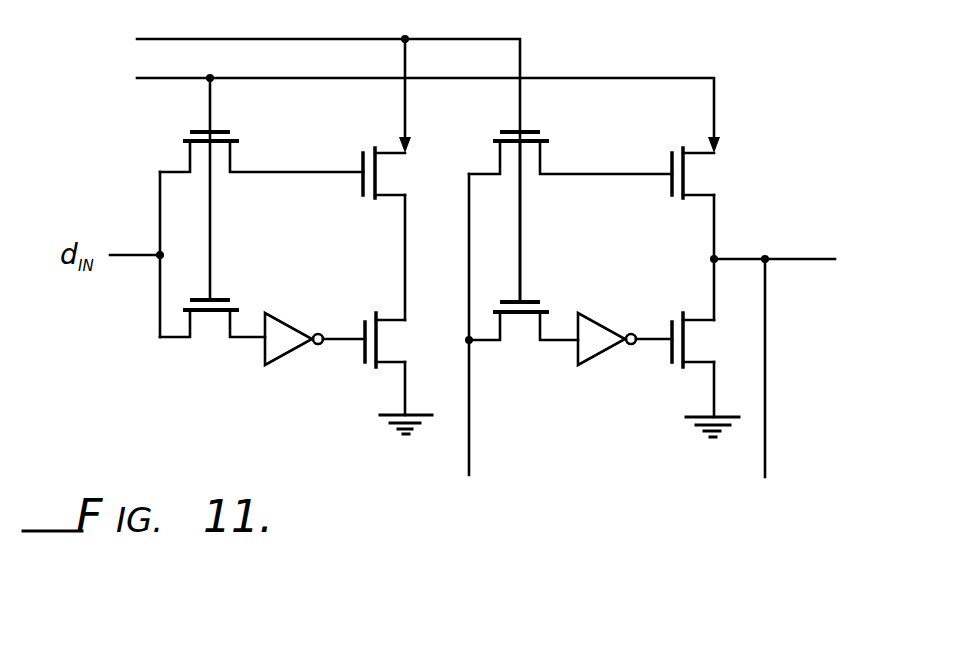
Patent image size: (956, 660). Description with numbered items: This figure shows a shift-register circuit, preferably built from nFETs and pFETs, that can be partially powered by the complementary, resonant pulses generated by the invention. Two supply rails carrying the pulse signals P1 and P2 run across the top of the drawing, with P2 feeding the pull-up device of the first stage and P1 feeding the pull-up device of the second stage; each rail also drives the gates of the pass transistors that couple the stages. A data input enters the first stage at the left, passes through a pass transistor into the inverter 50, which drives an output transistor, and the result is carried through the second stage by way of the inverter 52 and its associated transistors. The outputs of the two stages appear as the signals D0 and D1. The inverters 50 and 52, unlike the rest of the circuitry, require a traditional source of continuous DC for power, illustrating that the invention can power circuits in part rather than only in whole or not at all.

The inverter 50 is at (280, 366).
The inverter 52 is at (594, 366).
The clock signal line P1 is at (411, 106).
The clock signal line P2 is at (311, 161).
The data output D0 is at (474, 344).
The data output D1 is at (772, 384).